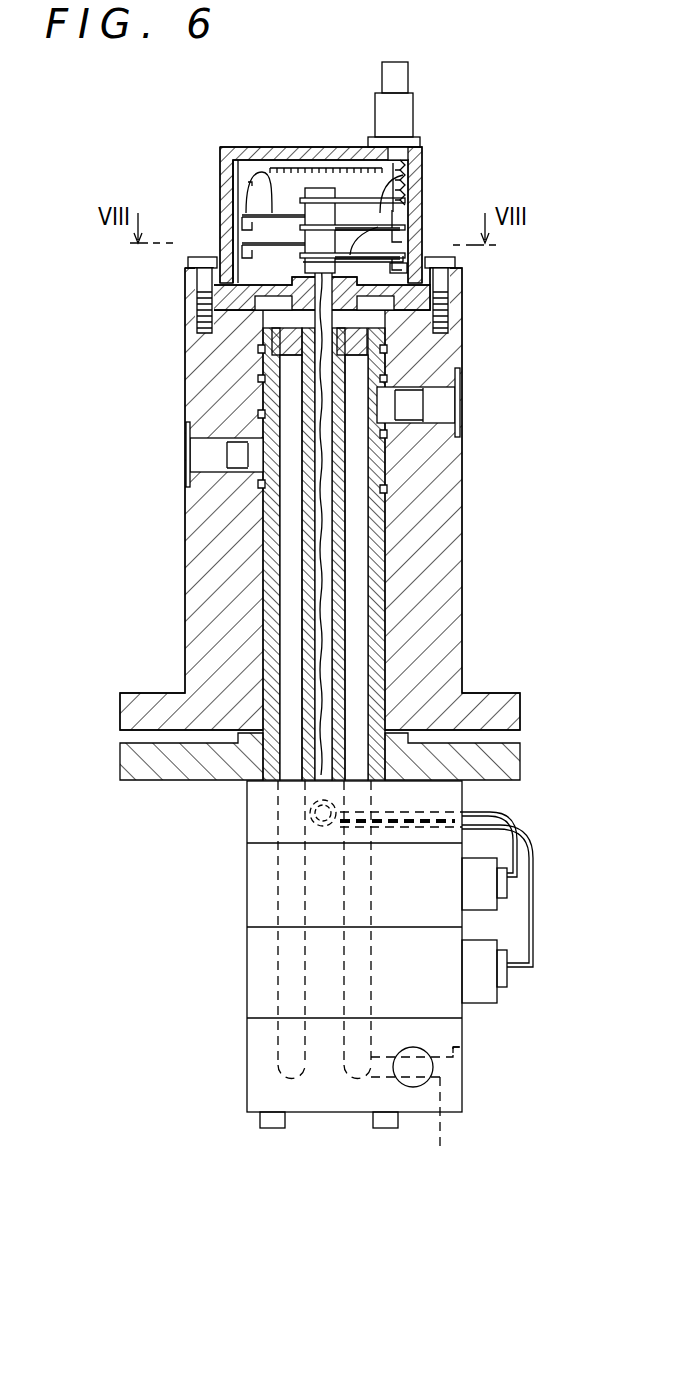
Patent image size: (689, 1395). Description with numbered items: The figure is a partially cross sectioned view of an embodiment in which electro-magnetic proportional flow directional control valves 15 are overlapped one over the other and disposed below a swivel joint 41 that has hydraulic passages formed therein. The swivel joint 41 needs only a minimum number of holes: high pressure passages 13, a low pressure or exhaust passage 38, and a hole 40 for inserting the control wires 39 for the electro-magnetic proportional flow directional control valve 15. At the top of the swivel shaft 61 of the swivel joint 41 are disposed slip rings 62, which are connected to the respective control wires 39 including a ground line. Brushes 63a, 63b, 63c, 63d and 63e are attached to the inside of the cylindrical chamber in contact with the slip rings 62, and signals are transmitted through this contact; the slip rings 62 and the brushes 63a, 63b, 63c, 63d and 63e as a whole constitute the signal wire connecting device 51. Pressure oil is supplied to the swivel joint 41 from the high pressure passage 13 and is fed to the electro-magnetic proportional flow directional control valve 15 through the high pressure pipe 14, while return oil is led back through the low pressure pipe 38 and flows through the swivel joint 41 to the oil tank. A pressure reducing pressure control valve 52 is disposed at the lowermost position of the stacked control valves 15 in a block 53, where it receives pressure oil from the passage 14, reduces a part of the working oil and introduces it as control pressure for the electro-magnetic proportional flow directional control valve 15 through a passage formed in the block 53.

The high pressure passage 13 is at (185, 453).
The high pressure pipe 14 is at (277, 808).
The electro-magnetic proportional flow directional control valve 15 is at (247, 885).
The low pressure passage 38 is at (462, 400).
The control wires 39 is at (323, 520).
The hole 40 is at (327, 620).
The swivel joint 41 is at (453, 480).
The signal wire connecting device 51 is at (432, 128).
The pressure reducing pressure control valve 52 is at (437, 1072).
The block 53 is at (463, 1037).
The swivel shaft 61 is at (343, 570).
The slip rings 62 is at (323, 190).
The brush 63a is at (403, 180).
The brush 63b is at (248, 160).
The brush 63c is at (403, 237).
The brush 63d is at (250, 243).
The brush 63e is at (437, 247).